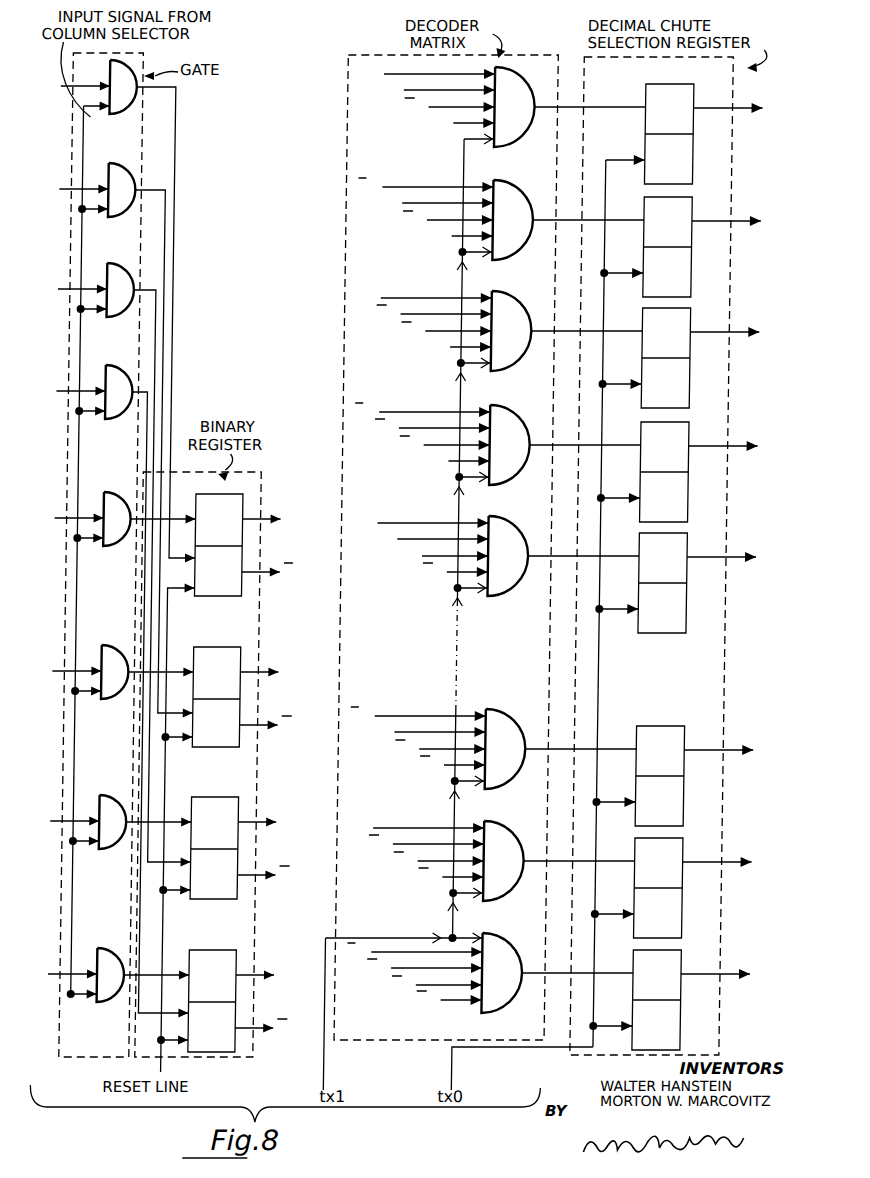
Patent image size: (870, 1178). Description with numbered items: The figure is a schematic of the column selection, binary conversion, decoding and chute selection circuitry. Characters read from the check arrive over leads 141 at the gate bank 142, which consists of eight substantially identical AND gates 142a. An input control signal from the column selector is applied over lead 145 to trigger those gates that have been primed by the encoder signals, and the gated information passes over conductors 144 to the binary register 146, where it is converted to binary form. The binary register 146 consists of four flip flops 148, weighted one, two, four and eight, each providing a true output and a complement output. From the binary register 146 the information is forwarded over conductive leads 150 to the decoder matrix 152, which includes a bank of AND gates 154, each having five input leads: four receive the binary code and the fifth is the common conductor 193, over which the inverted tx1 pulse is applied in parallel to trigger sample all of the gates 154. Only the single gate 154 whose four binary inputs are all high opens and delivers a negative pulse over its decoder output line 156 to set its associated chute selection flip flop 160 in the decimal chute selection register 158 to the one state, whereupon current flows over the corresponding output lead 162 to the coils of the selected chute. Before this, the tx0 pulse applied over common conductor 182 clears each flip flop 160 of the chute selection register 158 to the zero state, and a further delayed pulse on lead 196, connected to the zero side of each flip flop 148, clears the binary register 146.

The leads 141 is at (60, 289).
The gate bank 142 is at (88, 1062).
The AND gate 142a is at (113, 404).
The conductors 144 is at (172, 291).
The lead 145 is at (77, 1033).
The binary register 146 is at (255, 1040).
The flip flops 148 is at (235, 497).
The conductive leads 150 is at (268, 519).
The decoder matrix 152 is at (433, 1044).
The AND gates 154 is at (518, 122).
The decoder output line 156 is at (544, 331).
The decimal chute selection register 158 is at (590, 1057).
The chute selection flip-flop 160 is at (688, 142).
The output leads 162 is at (708, 107).
The common conductor 182 is at (460, 1071).
The common conductor 193 is at (332, 1071).
The lead 196 is at (170, 939).